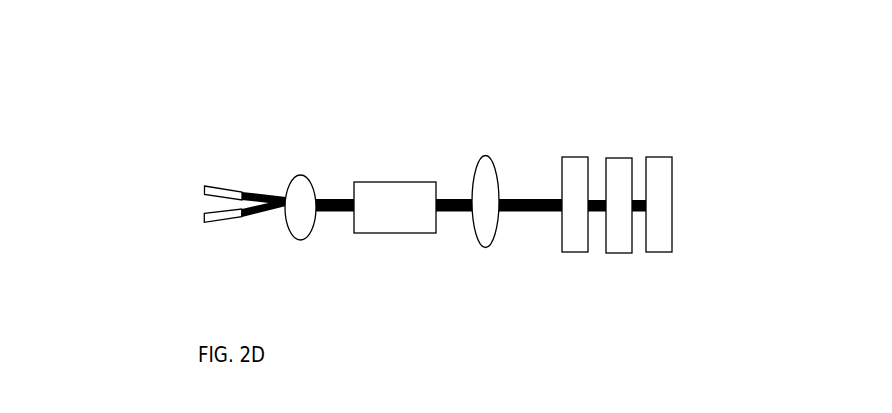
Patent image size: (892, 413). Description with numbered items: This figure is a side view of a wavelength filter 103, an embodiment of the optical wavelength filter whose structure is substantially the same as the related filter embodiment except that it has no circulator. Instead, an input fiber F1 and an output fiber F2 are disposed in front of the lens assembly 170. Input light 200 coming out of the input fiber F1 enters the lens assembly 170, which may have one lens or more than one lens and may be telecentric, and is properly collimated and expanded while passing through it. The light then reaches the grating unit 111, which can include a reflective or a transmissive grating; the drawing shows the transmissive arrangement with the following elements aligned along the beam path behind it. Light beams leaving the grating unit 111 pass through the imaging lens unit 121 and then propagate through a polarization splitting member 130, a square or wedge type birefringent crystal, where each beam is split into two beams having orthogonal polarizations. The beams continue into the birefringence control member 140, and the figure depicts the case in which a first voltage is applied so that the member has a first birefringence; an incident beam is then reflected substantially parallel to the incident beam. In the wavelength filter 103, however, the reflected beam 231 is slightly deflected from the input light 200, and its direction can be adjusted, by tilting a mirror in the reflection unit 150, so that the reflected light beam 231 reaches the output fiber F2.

The wavelength filter 103 is at (200, 54).
The input fiber F1 is at (220, 190).
The output fiber F2 is at (221, 218).
The input light 200 is at (259, 195).
The reflected light beam 231 is at (273, 217).
The lens assembly 170 is at (300, 183).
The grating unit 111 is at (375, 192).
The imaging lens unit 121 is at (483, 165).
The polarization splitting member 130 is at (575, 168).
The birefringence control member 140 is at (620, 169).
The reflection unit 150 is at (654, 168).